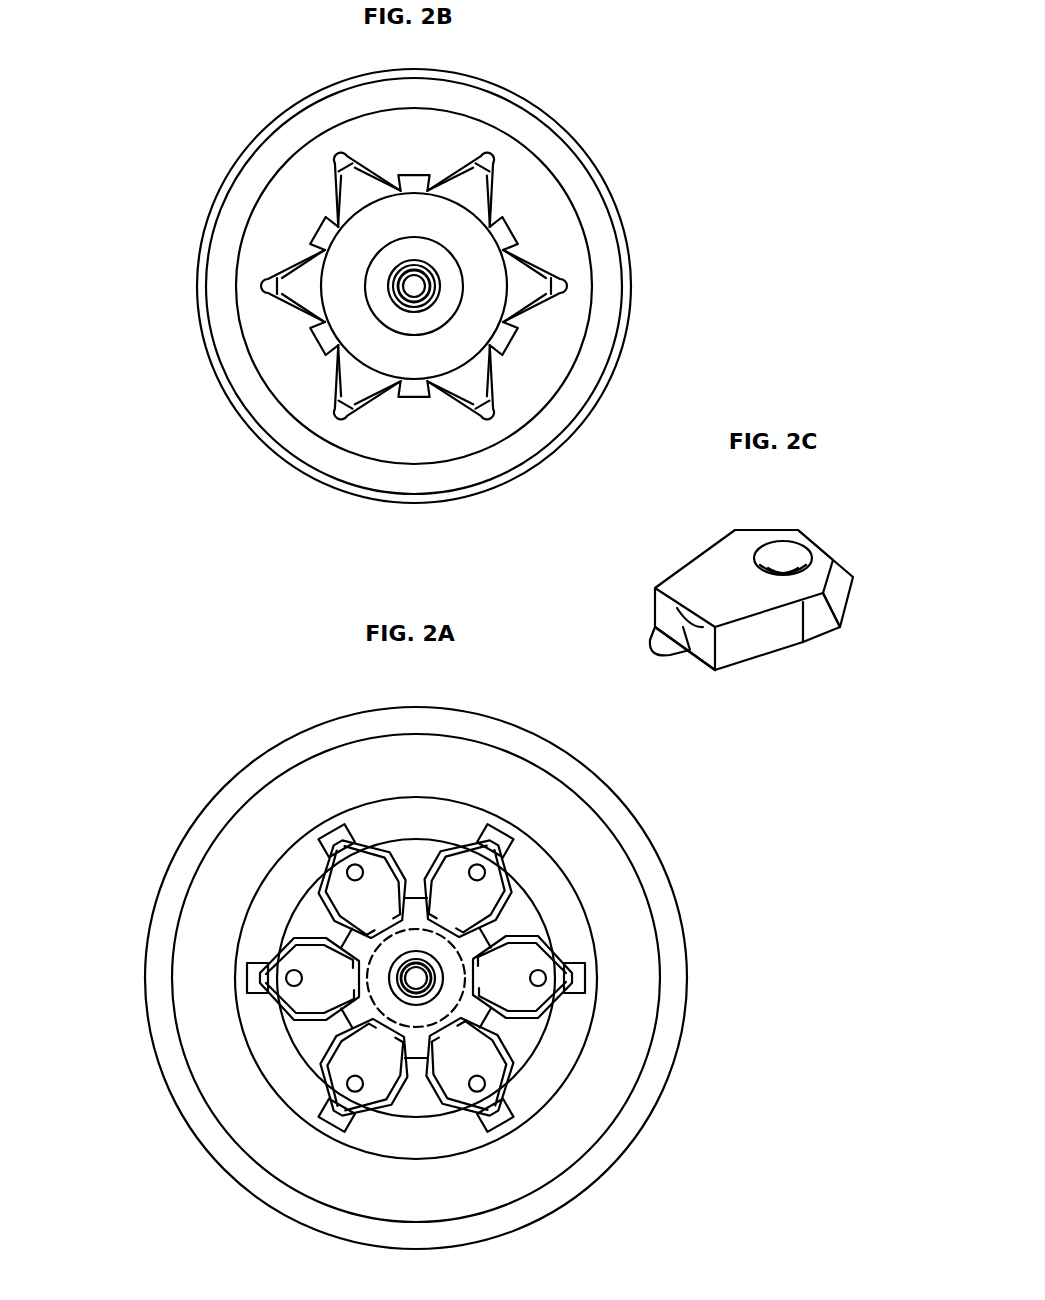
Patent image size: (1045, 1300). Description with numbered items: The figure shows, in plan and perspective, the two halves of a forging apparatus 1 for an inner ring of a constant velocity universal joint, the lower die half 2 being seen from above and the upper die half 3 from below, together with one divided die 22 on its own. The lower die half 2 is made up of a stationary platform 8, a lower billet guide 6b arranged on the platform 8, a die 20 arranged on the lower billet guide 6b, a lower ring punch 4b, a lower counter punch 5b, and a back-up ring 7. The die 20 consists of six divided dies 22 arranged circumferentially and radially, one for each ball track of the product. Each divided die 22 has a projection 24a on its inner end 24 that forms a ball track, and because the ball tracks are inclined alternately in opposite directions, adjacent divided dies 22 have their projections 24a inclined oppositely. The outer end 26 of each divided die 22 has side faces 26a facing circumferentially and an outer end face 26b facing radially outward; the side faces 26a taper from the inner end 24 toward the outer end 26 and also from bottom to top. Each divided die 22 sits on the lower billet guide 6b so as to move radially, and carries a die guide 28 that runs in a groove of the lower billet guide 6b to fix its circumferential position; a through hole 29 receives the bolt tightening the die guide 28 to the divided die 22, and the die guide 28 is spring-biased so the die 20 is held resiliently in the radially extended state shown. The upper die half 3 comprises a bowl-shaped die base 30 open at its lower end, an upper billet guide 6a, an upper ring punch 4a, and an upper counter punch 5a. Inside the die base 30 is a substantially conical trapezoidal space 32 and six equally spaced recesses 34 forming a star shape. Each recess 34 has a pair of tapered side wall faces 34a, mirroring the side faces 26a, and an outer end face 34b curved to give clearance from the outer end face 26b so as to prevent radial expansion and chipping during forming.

In FIG. 2A, the rotor core 1 is at (422, 1050).
In FIG. 2A, the lower die half 2 is at (117, 1043).
In FIG. 2B, the upper die half 3 is at (683, 242).
In FIG. 2B, the upper ring punch 4a is at (396, 298).
In FIG. 2A, the lower ring punch 4b is at (400, 965).
In FIG. 2B, the upper counter punch 5a is at (413, 289).
In FIG. 2A, the lower counter punch 5b is at (410, 977).
In FIG. 2B, the upper billet guide 6a is at (483, 327).
In FIG. 2A, the lower billet guide 6b is at (430, 866).
In FIG. 2A, the back-up ring 7 is at (641, 1033).
In FIG. 2A, the platform 8 is at (688, 977).
In FIG. 2A, the die 20 is at (567, 867).
In FIG. 2C, the divided die 22 is at (708, 580).
In FIG. 2A, the divided die 22 is at (394, 872).
In FIG. 2C, the inner end 24 is at (624, 612).
In FIG. 2C, the projection 24a is at (663, 643).
In FIG. 2C, the outer end 26 is at (859, 547).
In FIG. 2C, the side face 26a is at (780, 530).
In FIG. 2C, the outer end face 26b is at (820, 548).
In FIG. 2A, the die guide 28 is at (325, 845).
In FIG. 2C, the through hole 29 is at (783, 568).
In FIG. 2B, the die base 30 is at (378, 126).
In FIG. 2B, the space 32 is at (332, 238).
In FIG. 2B, the recess 34 is at (334, 150).
In FIG. 2B, the side wall face 34a is at (462, 168).
In FIG. 2B, the outer end face 34b is at (490, 175).